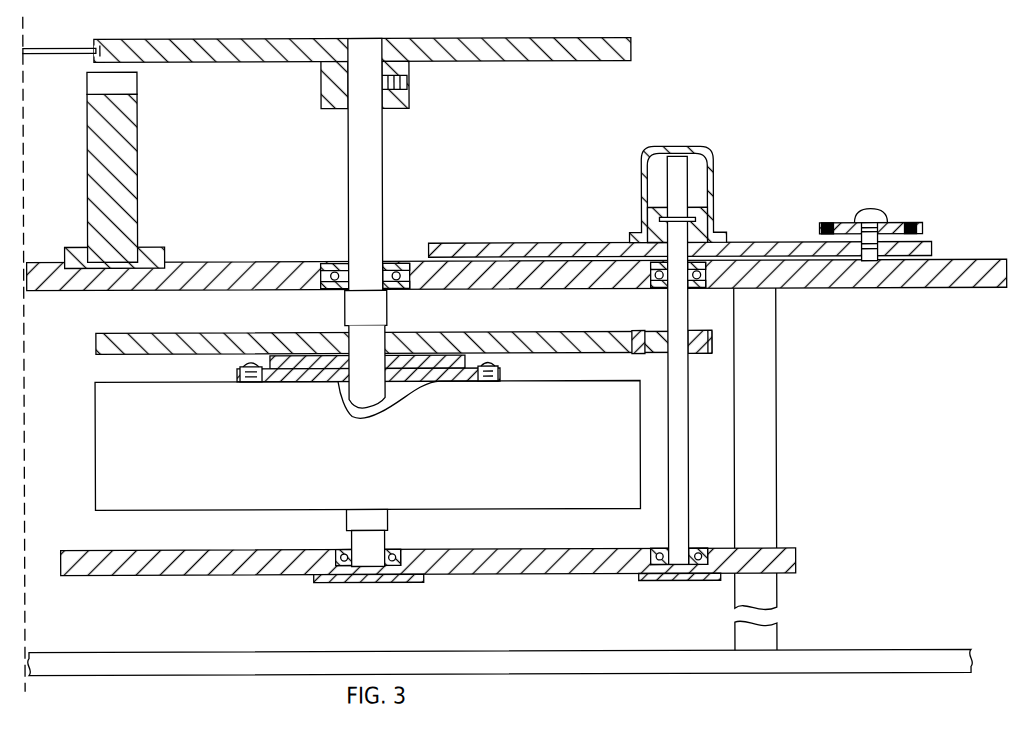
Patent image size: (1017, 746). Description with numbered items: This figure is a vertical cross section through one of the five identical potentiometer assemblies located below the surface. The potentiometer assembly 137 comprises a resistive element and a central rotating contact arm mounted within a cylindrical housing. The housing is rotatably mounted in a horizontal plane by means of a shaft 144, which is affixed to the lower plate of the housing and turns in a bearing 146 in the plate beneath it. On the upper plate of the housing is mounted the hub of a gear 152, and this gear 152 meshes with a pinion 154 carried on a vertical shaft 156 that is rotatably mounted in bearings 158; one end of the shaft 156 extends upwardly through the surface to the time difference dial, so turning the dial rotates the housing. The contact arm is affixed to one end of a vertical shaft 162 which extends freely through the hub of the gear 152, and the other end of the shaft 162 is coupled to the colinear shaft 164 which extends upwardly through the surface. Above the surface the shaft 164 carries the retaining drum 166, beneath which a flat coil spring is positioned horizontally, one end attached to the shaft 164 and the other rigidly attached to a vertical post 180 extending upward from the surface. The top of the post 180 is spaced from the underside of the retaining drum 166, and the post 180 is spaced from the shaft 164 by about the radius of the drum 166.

The retaining drum 166 is at (208, 38).
The vertical post 180 is at (140, 182).
The colinear shaft 164 is at (386, 163).
The vertical shaft 162 is at (363, 384).
The gear 152 is at (437, 332).
The pinion 154 is at (661, 330).
The vertical shaft 156 is at (690, 415).
The potentiometer assembly 137 is at (93, 418).
The shaft 144 is at (360, 518).
The bearing 146 is at (390, 552).
The bearings 158 is at (698, 549).